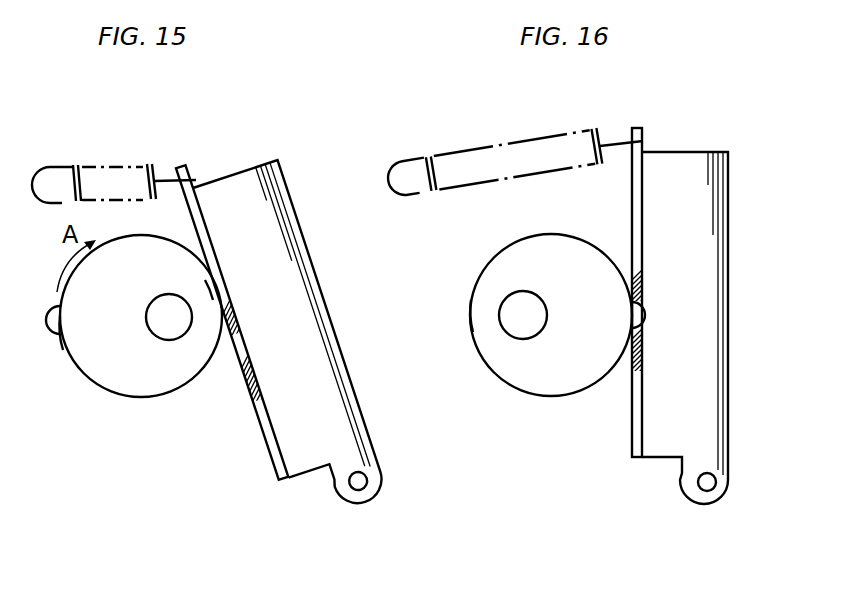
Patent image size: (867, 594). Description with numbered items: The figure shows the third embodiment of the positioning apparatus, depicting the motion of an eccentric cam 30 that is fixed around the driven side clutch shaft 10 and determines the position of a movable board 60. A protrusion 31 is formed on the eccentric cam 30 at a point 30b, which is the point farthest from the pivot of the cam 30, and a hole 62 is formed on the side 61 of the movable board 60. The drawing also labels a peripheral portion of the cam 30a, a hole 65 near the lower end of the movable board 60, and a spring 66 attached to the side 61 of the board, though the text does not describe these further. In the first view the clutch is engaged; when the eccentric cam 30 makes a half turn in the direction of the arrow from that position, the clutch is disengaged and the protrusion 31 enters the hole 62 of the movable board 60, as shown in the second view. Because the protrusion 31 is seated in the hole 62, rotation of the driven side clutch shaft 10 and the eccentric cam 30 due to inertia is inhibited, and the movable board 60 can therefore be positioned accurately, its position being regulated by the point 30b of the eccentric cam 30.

In FIG. 15, the driven side clutch shaft 10 is at (190, 342).
In FIG. 16, the driven side clutch shaft 10 is at (509, 339).
In FIG. 15, the eccentric cam 30 is at (116, 398).
In FIG. 16, the eccentric cam 30 is at (566, 396).
In FIG. 15, the peripheral surface of cam disc 30a is at (68, 355).
In FIG. 16, the peripheral surface of cam disc 30a is at (471, 318).
In FIG. 16, the point farthest from the pivot of the cam 30b is at (643, 304).
In FIG. 15, the protrusion 31 is at (43, 333).
In FIG. 16, the protrusion 31 is at (622, 312).
In FIG. 15, the movable board 60 is at (313, 262).
In FIG. 16, the movable board 60 is at (729, 370).
In FIG. 15, the side of the movable board 61 is at (217, 260).
In FIG. 16, the side of the movable board 61 is at (643, 195).
In FIG. 15, the hole 62 is at (245, 342).
In FIG. 16, the hole 62 is at (643, 330).
In FIG. 15, the pivot hole 65 is at (367, 477).
In FIG. 16, the pivot hole 65 is at (698, 486).
In FIG. 15, the spring 66 is at (55, 167).
In FIG. 16, the spring 66 is at (596, 128).